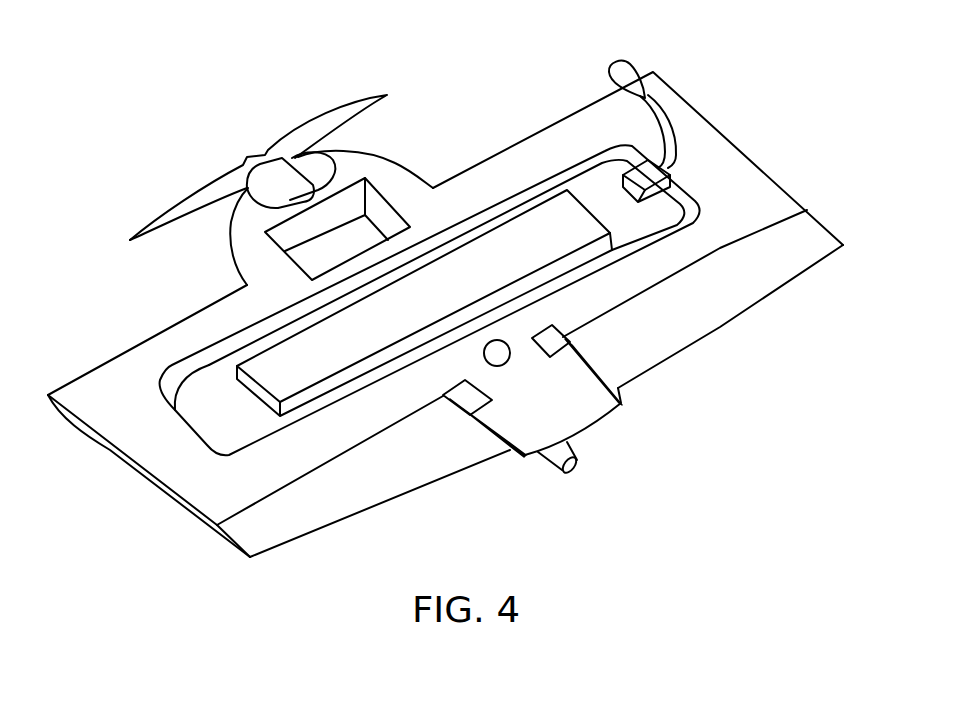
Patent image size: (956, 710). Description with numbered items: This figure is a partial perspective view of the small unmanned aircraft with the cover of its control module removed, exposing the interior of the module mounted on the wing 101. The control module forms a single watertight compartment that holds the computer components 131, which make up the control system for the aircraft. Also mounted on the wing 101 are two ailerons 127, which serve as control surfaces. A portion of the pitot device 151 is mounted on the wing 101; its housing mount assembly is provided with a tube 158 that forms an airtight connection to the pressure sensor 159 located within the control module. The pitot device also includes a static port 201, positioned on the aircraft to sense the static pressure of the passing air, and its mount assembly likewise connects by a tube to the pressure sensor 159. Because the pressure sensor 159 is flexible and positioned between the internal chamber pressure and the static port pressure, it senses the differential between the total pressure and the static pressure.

The wing 101 is at (107, 373).
The aileron 127 is at (737, 285).
The computer components 131 is at (482, 245).
The pitot device 151 is at (628, 80).
The tube 158 is at (655, 98).
The pressure sensor 159 is at (668, 168).
The static port 201 is at (497, 366).